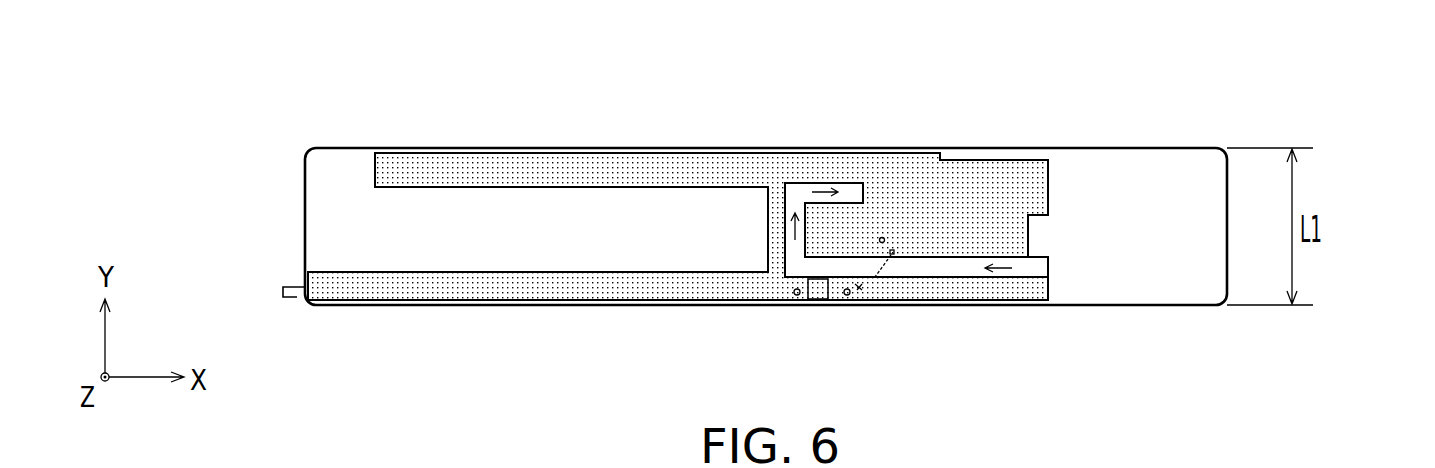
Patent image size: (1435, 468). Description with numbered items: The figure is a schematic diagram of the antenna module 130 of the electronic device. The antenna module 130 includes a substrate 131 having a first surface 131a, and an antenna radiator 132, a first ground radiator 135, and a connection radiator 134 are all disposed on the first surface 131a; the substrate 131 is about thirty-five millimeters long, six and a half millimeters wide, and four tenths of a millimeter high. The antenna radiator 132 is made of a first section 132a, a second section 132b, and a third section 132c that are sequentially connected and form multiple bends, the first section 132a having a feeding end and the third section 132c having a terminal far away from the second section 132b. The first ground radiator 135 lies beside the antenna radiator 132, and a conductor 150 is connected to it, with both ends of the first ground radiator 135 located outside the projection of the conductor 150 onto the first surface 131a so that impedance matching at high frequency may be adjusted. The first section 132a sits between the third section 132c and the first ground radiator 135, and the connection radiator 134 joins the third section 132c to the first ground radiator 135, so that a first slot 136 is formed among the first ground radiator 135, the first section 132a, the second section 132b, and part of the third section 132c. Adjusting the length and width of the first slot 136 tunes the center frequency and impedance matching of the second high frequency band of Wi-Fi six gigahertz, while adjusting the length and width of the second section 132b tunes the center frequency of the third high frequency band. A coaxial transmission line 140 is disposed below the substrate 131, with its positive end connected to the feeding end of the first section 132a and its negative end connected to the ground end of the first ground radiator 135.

The antenna module 130 is at (1344, 82).
The substrate 131 is at (660, 226).
The first surface 131a is at (305, 215).
The antenna radiator 132 is at (687, 220).
The first section 132a is at (953, 247).
The second section 132b is at (983, 178).
The third section 132c is at (725, 165).
The connection radiator 134 is at (773, 222).
The first ground radiator 135 is at (662, 282).
The first slot 136 is at (902, 276).
The coaxial transmission line 140 is at (293, 300).
The conductor 150 is at (422, 290).